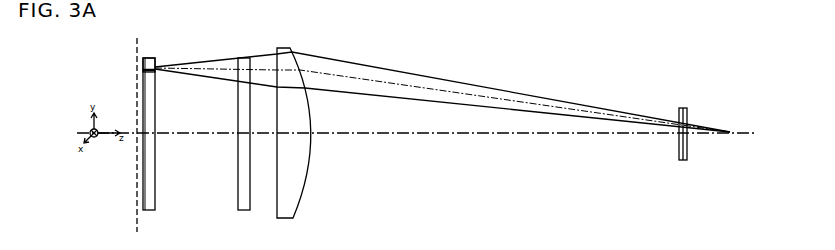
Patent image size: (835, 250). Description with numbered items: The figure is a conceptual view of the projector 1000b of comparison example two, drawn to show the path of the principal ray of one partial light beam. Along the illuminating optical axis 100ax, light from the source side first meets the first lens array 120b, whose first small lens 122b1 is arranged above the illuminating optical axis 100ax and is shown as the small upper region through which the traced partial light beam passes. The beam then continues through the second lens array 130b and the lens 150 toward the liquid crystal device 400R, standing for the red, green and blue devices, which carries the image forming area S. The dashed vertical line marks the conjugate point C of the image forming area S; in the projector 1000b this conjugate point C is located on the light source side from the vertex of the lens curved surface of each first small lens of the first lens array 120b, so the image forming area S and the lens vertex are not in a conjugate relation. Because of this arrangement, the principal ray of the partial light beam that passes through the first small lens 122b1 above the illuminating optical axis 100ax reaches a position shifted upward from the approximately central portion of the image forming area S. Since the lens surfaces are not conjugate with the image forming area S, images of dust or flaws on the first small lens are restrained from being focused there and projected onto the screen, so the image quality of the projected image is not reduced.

The illuminating optical axis 100ax is at (478, 135).
The conjugate point C is at (136, 144).
The first lens array 120b is at (150, 57).
The first small lens 122b1 is at (157, 78).
The second lens array 130b is at (244, 57).
The superposing lens 150 is at (283, 47).
The projector 1000b is at (610, 34).
The liquid crystal device 400R is at (680, 108).
The image forming area S is at (677, 138).